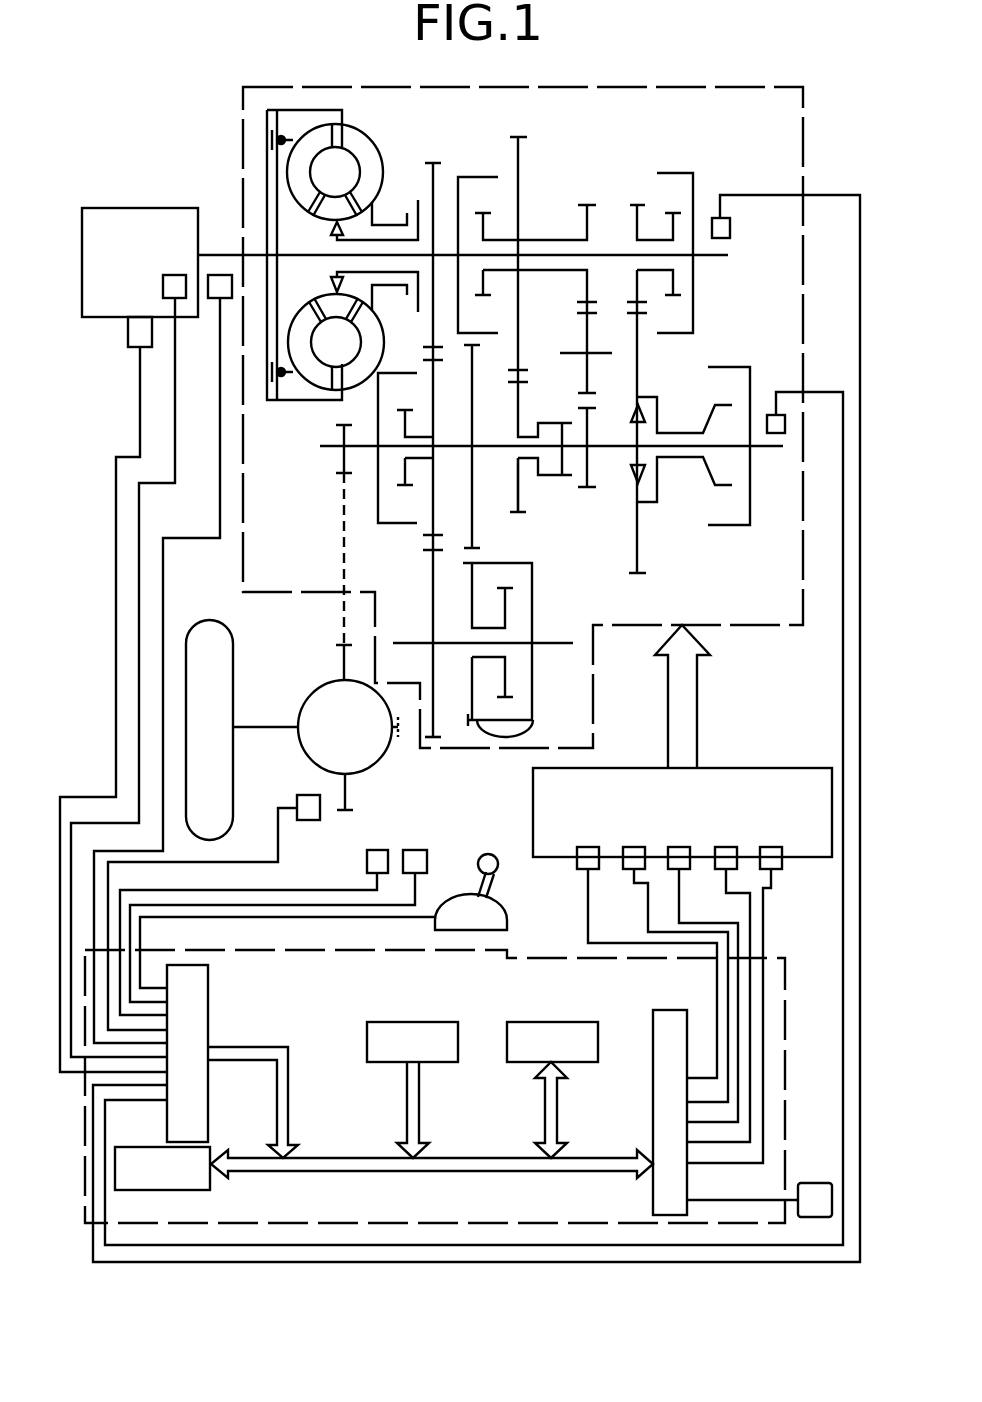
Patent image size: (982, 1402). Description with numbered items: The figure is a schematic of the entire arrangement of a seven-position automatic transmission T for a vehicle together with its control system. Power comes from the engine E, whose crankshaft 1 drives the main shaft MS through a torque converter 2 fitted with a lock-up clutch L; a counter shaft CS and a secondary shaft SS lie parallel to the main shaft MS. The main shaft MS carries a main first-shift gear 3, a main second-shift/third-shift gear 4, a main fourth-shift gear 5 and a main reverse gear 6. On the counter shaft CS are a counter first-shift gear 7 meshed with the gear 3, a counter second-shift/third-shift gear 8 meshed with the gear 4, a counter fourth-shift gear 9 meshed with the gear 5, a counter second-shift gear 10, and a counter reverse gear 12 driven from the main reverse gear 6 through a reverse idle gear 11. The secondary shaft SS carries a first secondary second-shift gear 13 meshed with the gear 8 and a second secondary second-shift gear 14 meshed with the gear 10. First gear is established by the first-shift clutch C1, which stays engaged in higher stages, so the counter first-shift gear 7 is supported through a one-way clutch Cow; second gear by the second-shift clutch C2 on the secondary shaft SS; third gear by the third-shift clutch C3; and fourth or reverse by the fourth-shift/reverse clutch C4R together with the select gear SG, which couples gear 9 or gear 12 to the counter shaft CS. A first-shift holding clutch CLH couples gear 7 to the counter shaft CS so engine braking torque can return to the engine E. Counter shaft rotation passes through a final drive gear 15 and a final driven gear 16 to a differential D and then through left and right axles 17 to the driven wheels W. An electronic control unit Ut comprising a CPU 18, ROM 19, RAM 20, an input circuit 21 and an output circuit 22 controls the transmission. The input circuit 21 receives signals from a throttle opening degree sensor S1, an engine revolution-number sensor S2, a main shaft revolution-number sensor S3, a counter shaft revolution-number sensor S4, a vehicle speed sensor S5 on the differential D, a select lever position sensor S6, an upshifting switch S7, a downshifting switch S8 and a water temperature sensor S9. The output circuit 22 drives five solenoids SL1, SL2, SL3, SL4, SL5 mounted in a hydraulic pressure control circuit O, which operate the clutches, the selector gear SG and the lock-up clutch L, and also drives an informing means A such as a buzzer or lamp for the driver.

The engine E is at (179, 208).
The crankshaft 1 is at (223, 255).
The torque converter 2 is at (380, 152).
The lock-up clutch L is at (258, 400).
The automatic transmission T is at (272, 600).
The main shaft MS is at (716, 257).
The counter shaft CS is at (765, 448).
The secondary shaft SS is at (562, 643).
The main first-shift gear 3 is at (637, 205).
The main second-shift/third-shift gear 4 is at (433, 163).
The main fourth-shift gear 5 is at (520, 137).
The main reverse gear 6 is at (587, 205).
The counter first-shift gear 7 is at (640, 574).
The counter second-shift/third-shift gear 8 is at (432, 537).
The counter fourth-shift gear 9 is at (527, 512).
The counter second-shift gear 10 is at (473, 432).
The reverse idle gear 11 is at (578, 308).
The counter reverse gear 12 is at (587, 489).
The first secondary second-shift gear 13 is at (436, 737).
The second secondary second-shift gear 14 is at (533, 721).
The final drive gear 15 is at (344, 470).
The final driven gear 16 is at (344, 645).
The axle 17 is at (268, 727).
The CPU 18 is at (180, 1190).
The ROM 19 is at (402, 1022).
The RAM 20 is at (548, 1022).
The input circuit 21 is at (208, 1012).
The output circuit 22 is at (653, 1110).
The first-shift clutch C1 is at (672, 173).
The second-shift clutch C2 is at (497, 630).
The third-shift clutch C3 is at (410, 431).
The fourth-shift/reverse clutch C4R is at (475, 236).
The first-shift holding clutch CLH is at (722, 525).
The one-way clutch Cow is at (648, 410).
The select gear SG is at (560, 379).
The differential D is at (305, 750).
The driven wheel W is at (207, 620).
The hydraulic pressure control circuit O is at (768, 768).
The electronic control unit Ut is at (788, 1020).
The informing means A is at (812, 1183).
The throttle opening degree sensor S1 is at (128, 339).
The engine revolution-number sensor S2 is at (215, 298).
The main shaft revolution-number sensor S3 is at (730, 229).
The counter shaft revolution-number sensor S4 is at (772, 415).
The vehicle speed sensor S5 is at (308, 820).
The select lever position sensor S6 is at (502, 905).
The upshifting switch S7 is at (379, 850).
The downshifting switch S8 is at (418, 850).
The water temperature sensor S9 is at (163, 288).
The solenoid SL1 is at (577, 862).
The solenoid SL2 is at (634, 869).
The solenoid SL3 is at (682, 870).
The solenoid SL4 is at (734, 870).
The solenoid SL5 is at (781, 861).